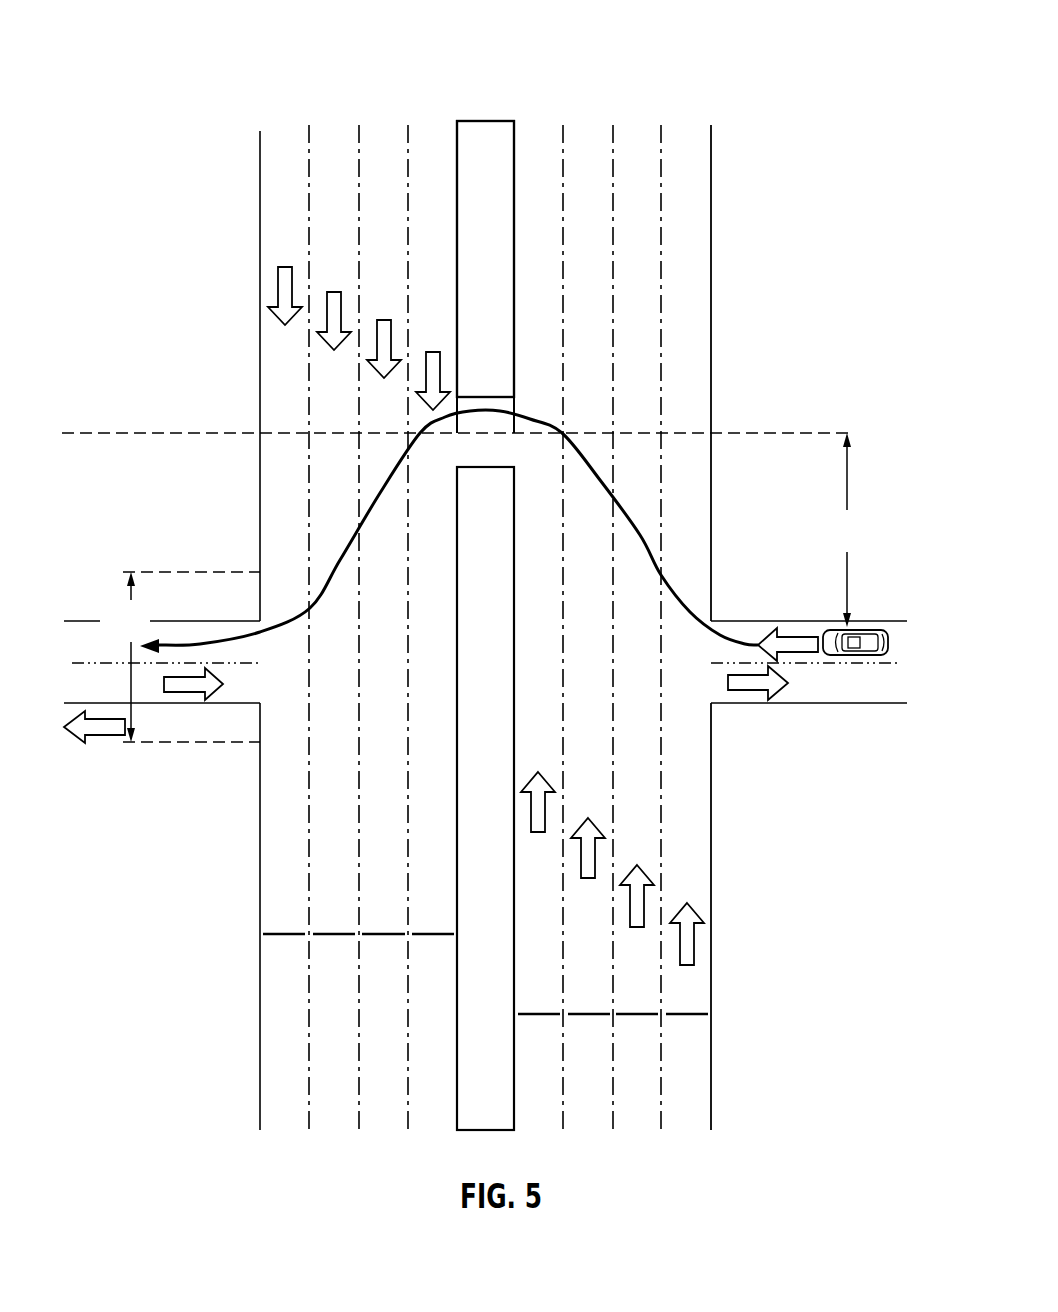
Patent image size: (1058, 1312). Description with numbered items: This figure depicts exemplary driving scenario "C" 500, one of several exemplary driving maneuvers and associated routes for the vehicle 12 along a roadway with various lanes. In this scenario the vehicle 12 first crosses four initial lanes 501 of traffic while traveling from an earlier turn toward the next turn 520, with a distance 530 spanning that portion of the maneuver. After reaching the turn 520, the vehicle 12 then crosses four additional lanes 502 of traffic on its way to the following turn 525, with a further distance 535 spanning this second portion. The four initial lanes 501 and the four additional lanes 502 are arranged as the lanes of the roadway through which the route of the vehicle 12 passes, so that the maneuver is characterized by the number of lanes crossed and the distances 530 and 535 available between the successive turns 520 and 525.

The scenario "C" 500 is at (147, 46).
The vehicle 12 is at (892, 637).
The i+1-th turn 520 is at (517, 460).
The i+2-th turn 525 is at (220, 595).
The distance d_i 530 is at (848, 465).
The distance d_{i+1} 535 is at (130, 598).
The initial lanes 501 is at (613, 998).
The additional lanes 502 is at (358, 918).